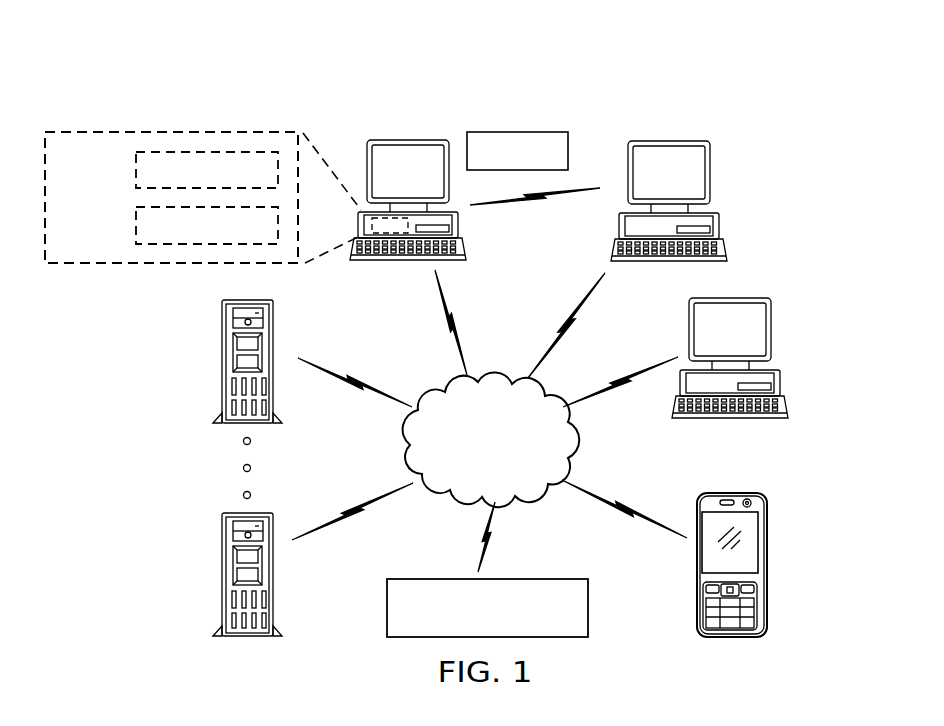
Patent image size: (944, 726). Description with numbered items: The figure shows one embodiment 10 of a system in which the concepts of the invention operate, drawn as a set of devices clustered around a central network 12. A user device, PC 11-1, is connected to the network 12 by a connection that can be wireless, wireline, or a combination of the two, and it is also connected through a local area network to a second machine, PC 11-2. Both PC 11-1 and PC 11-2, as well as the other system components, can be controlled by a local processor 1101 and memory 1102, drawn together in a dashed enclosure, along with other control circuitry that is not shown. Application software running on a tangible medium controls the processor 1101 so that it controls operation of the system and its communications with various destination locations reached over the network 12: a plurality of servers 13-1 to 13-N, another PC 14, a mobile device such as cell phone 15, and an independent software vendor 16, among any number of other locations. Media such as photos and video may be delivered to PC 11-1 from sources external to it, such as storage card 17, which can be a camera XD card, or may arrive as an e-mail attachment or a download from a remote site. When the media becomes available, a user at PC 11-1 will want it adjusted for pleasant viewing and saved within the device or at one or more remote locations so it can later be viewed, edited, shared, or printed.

The system embodiment 10 is at (283, 94).
The processor 1101 is at (136, 215).
The memory 1102 is at (136, 160).
The PC 11-1 is at (408, 140).
The PC 11-2 is at (668, 141).
The network 12 is at (487, 380).
The server 13-1 is at (222, 361).
The server 13-N is at (222, 573).
The PC 14 is at (772, 330).
The cell phone 15 is at (766, 565).
The vendor 16 is at (387, 606).
The storage card 17 is at (519, 132).